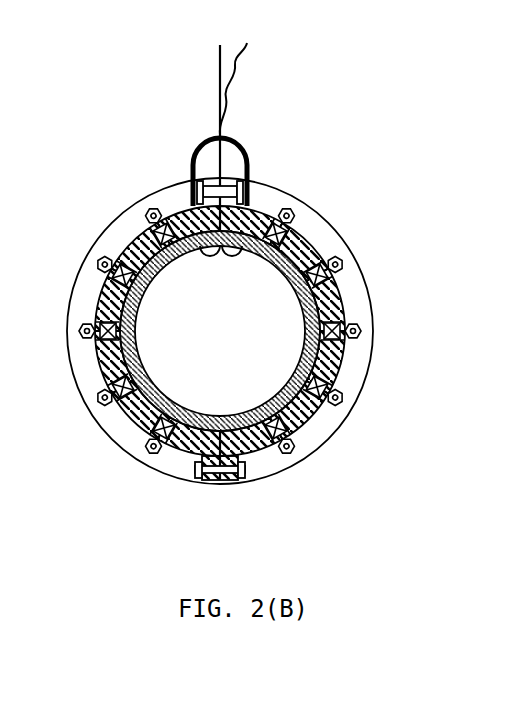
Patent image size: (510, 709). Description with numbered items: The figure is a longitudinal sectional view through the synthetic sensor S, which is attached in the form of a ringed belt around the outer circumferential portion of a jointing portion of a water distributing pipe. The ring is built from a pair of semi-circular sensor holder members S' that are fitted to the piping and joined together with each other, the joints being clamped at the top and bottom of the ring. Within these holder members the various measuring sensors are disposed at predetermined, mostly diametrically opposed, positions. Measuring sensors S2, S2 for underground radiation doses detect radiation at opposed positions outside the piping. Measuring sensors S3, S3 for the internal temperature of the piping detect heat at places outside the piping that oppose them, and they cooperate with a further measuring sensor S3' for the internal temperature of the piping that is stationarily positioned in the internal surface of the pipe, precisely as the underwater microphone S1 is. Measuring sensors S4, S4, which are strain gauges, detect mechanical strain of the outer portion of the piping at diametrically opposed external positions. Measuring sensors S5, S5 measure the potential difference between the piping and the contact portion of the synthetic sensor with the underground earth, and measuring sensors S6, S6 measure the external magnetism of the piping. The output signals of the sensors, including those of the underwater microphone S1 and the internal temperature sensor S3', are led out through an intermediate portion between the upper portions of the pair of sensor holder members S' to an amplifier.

The synthetic sensor S is at (211, 285).
The underwater microphone S1 is at (206, 253).
The measuring sensor for underground radiation doses S2 is at (283, 520).
The measuring sensor for internal temperature of the piping S3 is at (243, 324).
The measuring sensor for internal temperature of the piping S3' is at (254, 287).
The measuring sensor for external strain of the piping S4 is at (367, 490).
The measuring sensor for potential difference S5 is at (308, 240).
The measuring sensor for external magnetism of the piping S6 is at (347, 315).
The sensor holder member S' is at (218, 354).